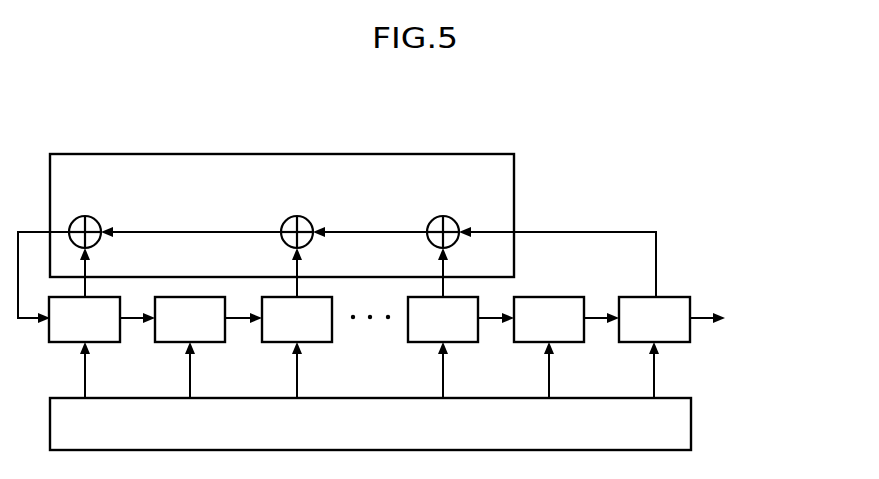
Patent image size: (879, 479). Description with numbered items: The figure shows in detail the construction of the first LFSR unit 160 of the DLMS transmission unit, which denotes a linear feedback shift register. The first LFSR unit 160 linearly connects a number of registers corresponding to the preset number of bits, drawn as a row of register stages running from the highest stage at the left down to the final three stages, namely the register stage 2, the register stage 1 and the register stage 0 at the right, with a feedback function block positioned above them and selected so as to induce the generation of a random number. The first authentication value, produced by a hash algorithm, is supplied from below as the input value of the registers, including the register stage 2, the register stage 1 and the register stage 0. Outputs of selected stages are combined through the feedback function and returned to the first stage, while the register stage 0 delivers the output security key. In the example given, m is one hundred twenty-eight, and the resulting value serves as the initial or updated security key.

The first LFSR unit 160 is at (91, 123).
The shift register stage b2 2 is at (443, 347).
The shift register stage b1 1 is at (549, 347).
The shift register stage b0 0 is at (654, 347).